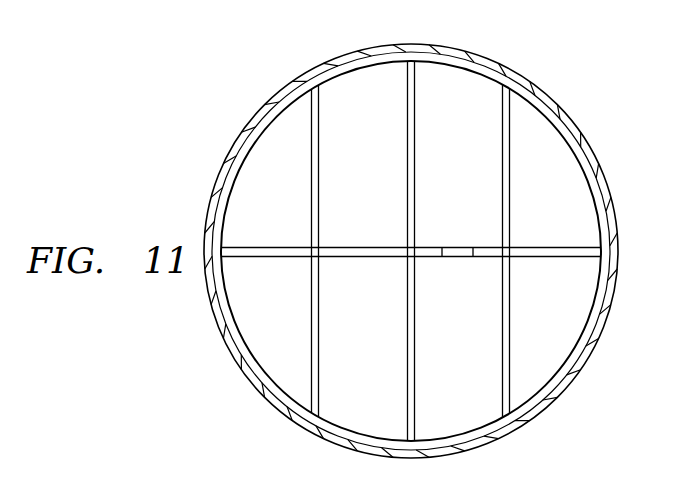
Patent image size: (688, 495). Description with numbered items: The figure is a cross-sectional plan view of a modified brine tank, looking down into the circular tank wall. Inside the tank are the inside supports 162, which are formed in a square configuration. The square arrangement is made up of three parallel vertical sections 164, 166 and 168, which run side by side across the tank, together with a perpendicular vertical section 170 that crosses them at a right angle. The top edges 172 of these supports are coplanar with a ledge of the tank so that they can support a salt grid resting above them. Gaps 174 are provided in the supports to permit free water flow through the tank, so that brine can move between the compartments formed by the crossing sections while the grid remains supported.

The inside supports 162 is at (282, 153).
The parallel vertical section 164 is at (310, 207).
The parallel vertical section 166 is at (415, 157).
The parallel vertical section 168 is at (510, 208).
The perpendicular vertical section 170 is at (368, 247).
The top edges 172 is at (312, 278).
The gaps 174 is at (457, 247).